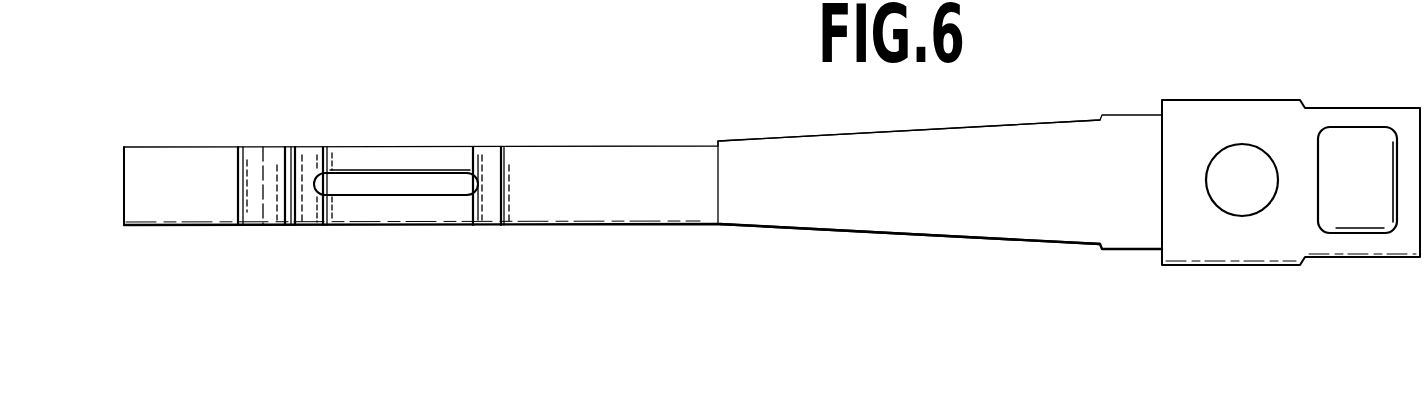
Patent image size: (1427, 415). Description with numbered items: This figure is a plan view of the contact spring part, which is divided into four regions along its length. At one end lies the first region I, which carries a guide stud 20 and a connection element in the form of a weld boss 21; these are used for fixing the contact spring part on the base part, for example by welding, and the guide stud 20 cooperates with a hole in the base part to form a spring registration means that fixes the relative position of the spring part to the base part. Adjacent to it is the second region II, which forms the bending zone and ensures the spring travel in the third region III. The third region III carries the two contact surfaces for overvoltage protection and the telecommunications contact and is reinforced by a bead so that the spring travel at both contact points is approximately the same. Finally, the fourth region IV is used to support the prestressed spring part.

The guide stud 20 is at (1238, 158).
The weld boss 21 is at (1338, 138).
The first region I is at (1288, 212).
The second region II is at (981, 198).
The third region III is at (405, 197).
The fourth region IV is at (277, 217).